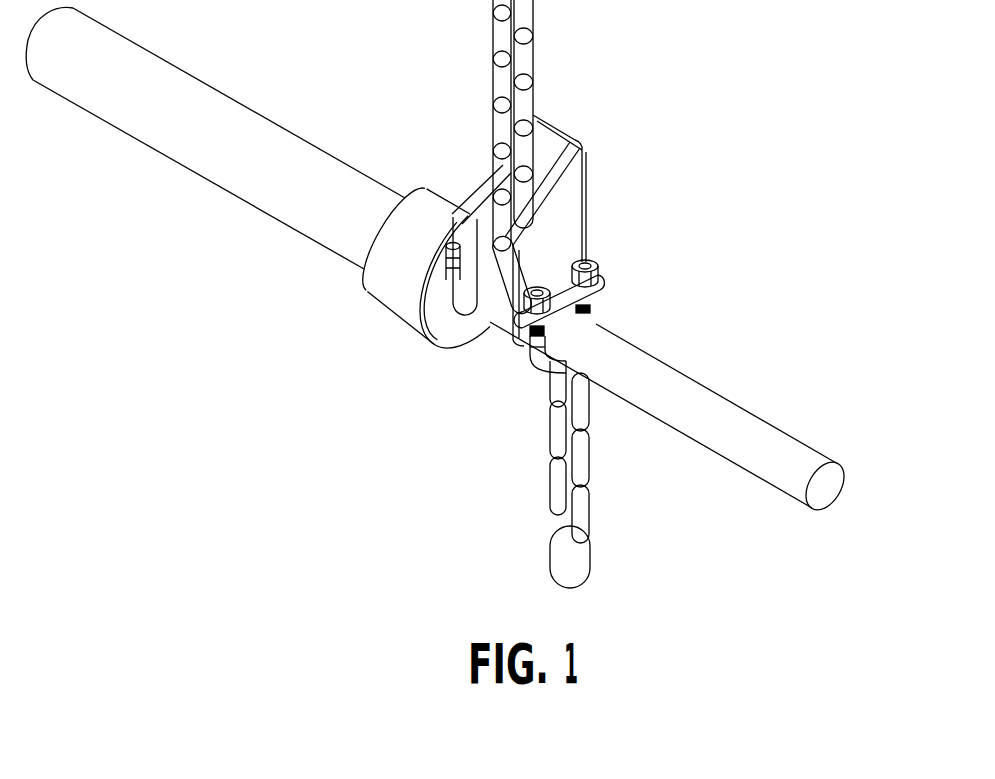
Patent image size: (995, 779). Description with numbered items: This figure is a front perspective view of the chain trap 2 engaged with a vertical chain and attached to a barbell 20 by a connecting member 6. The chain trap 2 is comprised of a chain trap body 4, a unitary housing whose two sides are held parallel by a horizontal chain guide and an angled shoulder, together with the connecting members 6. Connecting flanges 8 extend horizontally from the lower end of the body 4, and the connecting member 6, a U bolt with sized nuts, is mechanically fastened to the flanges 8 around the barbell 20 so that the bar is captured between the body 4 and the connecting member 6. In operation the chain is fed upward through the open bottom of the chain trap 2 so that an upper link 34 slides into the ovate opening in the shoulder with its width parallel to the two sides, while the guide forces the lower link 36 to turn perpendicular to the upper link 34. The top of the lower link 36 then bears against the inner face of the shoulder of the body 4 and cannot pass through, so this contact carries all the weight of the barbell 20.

The chain trap 2 is at (640, 160).
The chain trap body 4 is at (556, 137).
The connecting member 6 is at (530, 360).
The connecting flange 8 is at (602, 285).
The barbell 20 is at (765, 425).
The upper link 34 is at (497, 146).
The lower link 36 is at (472, 217).